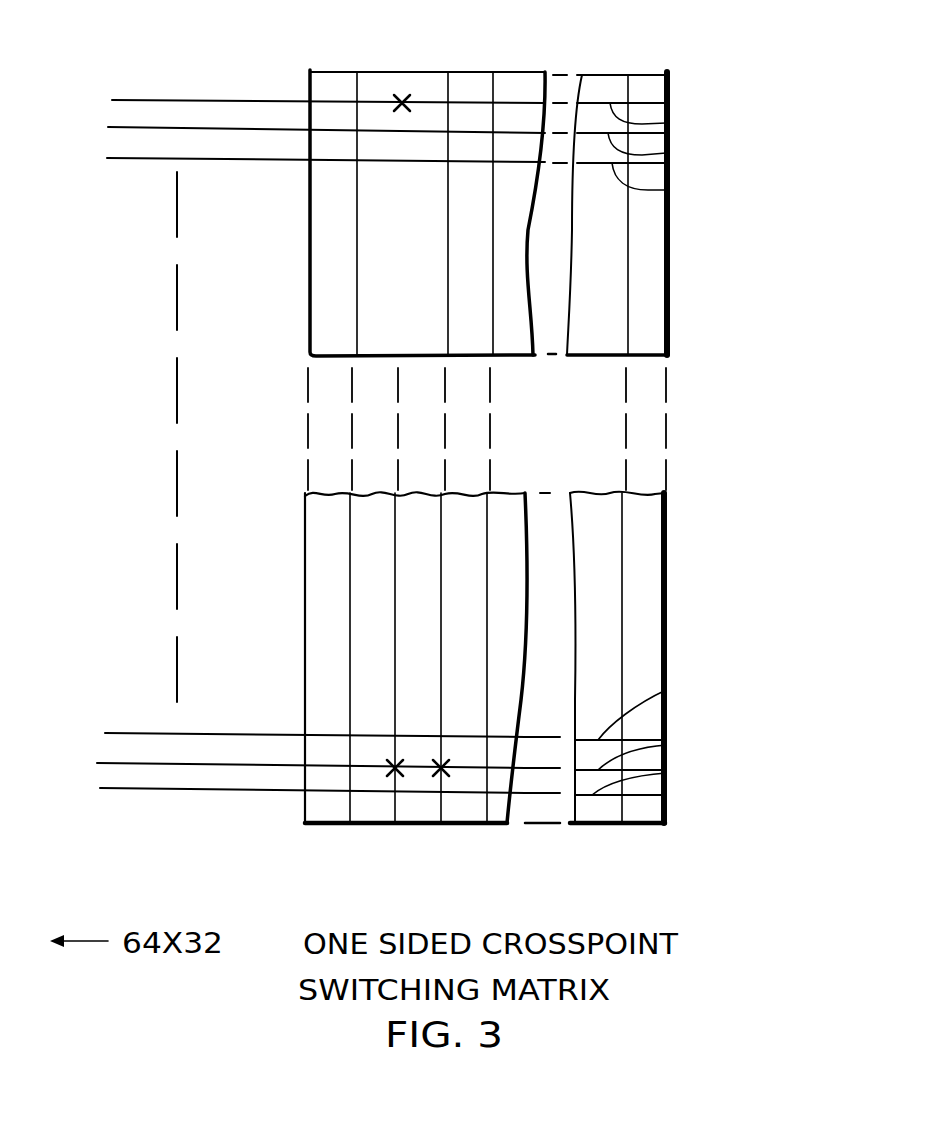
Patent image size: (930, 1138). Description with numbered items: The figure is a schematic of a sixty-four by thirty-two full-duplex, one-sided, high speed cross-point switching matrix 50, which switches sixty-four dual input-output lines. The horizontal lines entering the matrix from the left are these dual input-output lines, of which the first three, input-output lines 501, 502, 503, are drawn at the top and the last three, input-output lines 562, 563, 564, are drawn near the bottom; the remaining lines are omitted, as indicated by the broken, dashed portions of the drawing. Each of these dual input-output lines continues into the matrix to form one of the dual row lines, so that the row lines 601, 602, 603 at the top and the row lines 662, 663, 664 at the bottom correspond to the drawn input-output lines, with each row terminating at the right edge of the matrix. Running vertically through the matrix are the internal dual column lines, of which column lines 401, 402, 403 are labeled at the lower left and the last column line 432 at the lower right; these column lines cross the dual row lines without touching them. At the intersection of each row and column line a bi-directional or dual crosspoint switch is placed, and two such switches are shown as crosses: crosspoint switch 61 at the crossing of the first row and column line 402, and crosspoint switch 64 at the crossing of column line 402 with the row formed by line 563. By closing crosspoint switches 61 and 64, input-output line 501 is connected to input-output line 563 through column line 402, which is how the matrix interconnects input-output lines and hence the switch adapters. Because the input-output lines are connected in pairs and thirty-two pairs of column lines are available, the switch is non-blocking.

The cross-point switching matrix 50 is at (695, 319).
The crosspoint switch 61 is at (413, 95).
The crosspoint switch 64 is at (380, 756).
The input-output line 501 is at (130, 100).
The input-output line 502 is at (118, 127).
The input-output line 503 is at (112, 158).
The input-output line 562 is at (108, 733).
The input-output line 563 is at (101, 763).
The input-output line 564 is at (100, 788).
The dual row line 601 is at (668, 118).
The dual row line 602 is at (668, 152).
The dual row line 603 is at (668, 190).
The dual row line 662 is at (666, 690).
The dual row line 663 is at (666, 745).
The dual row line 664 is at (666, 773).
The dual column line 401 is at (347, 805).
The dual column line 402 is at (392, 805).
The dual column line 403 is at (437, 805).
The dual column line 432 is at (622, 812).